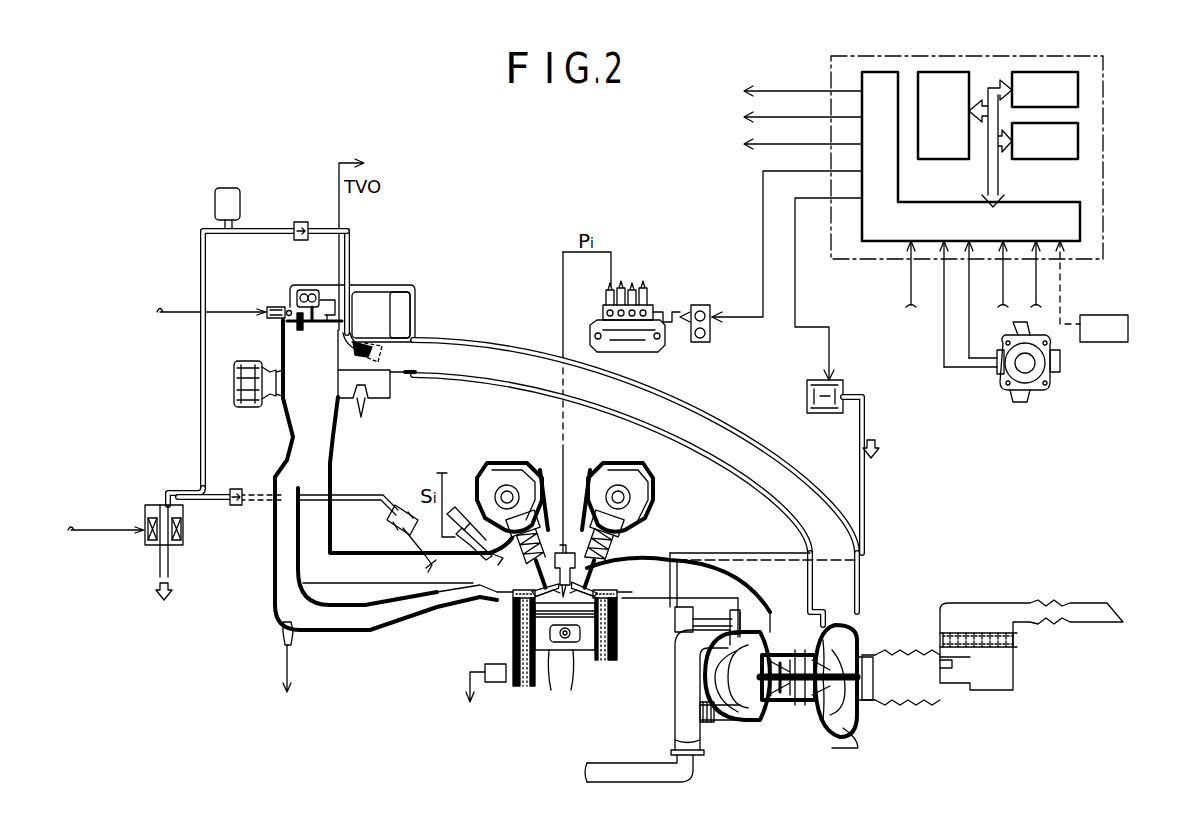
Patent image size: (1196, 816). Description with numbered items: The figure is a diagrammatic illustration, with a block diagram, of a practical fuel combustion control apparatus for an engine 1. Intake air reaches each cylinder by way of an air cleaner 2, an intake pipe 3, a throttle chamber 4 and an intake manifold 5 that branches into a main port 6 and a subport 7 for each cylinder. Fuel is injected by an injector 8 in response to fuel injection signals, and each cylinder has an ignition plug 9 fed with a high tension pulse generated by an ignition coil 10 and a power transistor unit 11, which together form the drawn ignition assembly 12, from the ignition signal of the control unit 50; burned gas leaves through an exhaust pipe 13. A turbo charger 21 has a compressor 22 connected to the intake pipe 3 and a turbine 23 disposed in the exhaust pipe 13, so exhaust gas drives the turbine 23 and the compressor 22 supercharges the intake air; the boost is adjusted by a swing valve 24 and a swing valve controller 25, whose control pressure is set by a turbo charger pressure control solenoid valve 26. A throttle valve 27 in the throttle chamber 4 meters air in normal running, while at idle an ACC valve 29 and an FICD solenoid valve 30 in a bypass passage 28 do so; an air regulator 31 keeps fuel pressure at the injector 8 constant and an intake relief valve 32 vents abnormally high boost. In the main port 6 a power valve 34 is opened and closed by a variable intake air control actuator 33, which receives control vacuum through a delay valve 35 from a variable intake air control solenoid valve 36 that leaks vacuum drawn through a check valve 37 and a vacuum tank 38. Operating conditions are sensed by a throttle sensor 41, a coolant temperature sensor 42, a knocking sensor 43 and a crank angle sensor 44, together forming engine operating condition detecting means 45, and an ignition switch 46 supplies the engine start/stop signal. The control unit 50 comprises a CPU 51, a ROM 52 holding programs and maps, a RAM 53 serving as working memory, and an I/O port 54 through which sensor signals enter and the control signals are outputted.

The engine 1 is at (479, 447).
The air cleaner 2 is at (966, 607).
The intake pipe 3 is at (804, 686).
The throttle chamber 4 is at (293, 349).
The intake manifold 5 is at (338, 660).
The main port 6 is at (362, 564).
The subport 7 is at (362, 622).
The injector 8 is at (470, 520).
The ignition plug 9 is at (560, 550).
The ignition coil 10 is at (603, 322).
The power transistor unit 11 is at (710, 325).
The igniter 12 is at (651, 257).
The exhaust pipe 13 is at (660, 707).
The turbo charger 21 is at (788, 745).
The compressor 22 is at (845, 632).
The turbine 23 is at (760, 640).
The swing valve 24 is at (728, 648).
The swing valve controller 25 is at (674, 628).
The turbo charger pressure control solenoid valve 26 is at (807, 398).
The throttle valve 27 is at (375, 345).
The bypass passage 28 is at (370, 292).
The ACC valve 29 is at (272, 305).
The FICD solenoid valve 30 is at (314, 290).
The air regulator 31 is at (365, 408).
The intake relief valve 32 is at (256, 407).
The variable intake air control actuator 33 is at (408, 507).
The power valve 34 is at (440, 578).
The delay valve 35 is at (230, 512).
The variable intake air control solenoid valve 36 is at (183, 528).
The check valve 37 is at (301, 222).
The vacuum tank 38 is at (233, 188).
The throttle sensor 41 is at (372, 352).
The coolant temperature sensor 42 is at (283, 630).
The knocking sensor 43 is at (496, 664).
The crank angle sensor 44 is at (1058, 354).
The engine operating condition detecting means 45 is at (397, 713).
The ignition switch 46 is at (1128, 322).
The control unit 50 is at (944, 60).
The CPU 51 is at (958, 160).
The ROM 52 is at (1036, 72).
The RAM 53 is at (1040, 160).
The I/O port 54 is at (1050, 202).